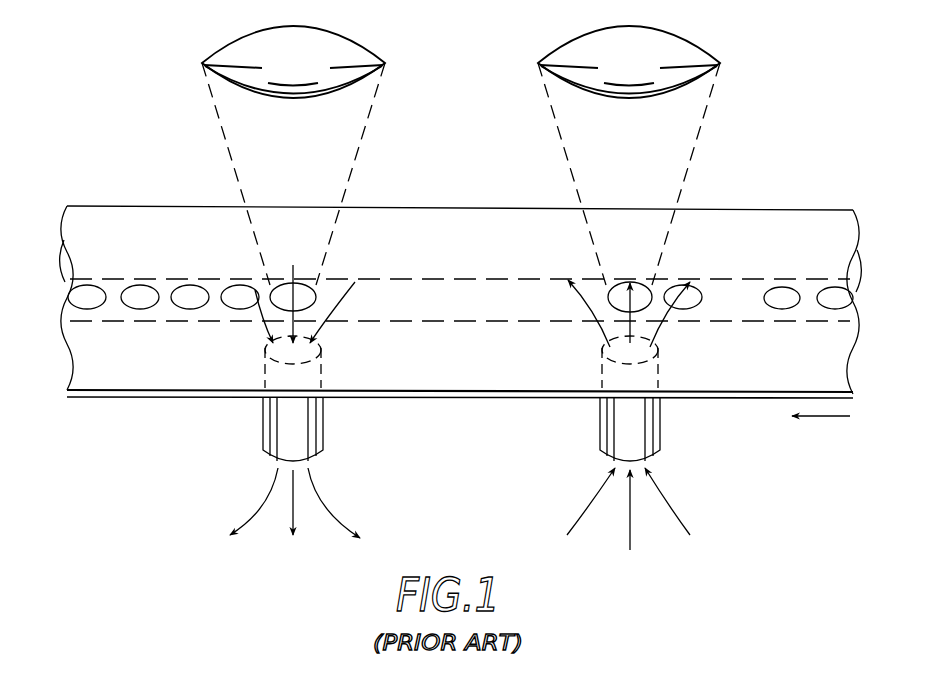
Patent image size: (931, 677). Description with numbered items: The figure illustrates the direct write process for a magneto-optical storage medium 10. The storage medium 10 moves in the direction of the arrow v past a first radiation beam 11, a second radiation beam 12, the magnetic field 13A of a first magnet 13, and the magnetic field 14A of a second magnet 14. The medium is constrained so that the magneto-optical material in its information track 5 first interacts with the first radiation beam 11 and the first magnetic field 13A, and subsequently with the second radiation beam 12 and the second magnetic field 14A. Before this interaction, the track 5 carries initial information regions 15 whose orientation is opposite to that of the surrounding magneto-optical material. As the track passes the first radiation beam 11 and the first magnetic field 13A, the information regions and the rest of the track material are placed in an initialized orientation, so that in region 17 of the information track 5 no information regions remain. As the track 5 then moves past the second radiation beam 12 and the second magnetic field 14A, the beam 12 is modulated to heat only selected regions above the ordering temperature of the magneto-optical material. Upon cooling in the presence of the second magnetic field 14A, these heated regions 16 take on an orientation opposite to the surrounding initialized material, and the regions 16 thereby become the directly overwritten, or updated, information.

The information track 5 is at (150, 320).
The magneto-optical storage medium 10 is at (176, 425).
The first radiation beam 11 is at (706, 122).
The second radiation beam 12 is at (215, 120).
The first magnet 13 is at (598, 430).
The first magnetic field 13A is at (608, 325).
The second magnet 14 is at (323, 430).
The second magnetic field 14A is at (318, 333).
The initial information regions 15 is at (688, 283).
The directly overwritten information regions 16 is at (227, 283).
The initialized region of the information track 17 is at (457, 300).